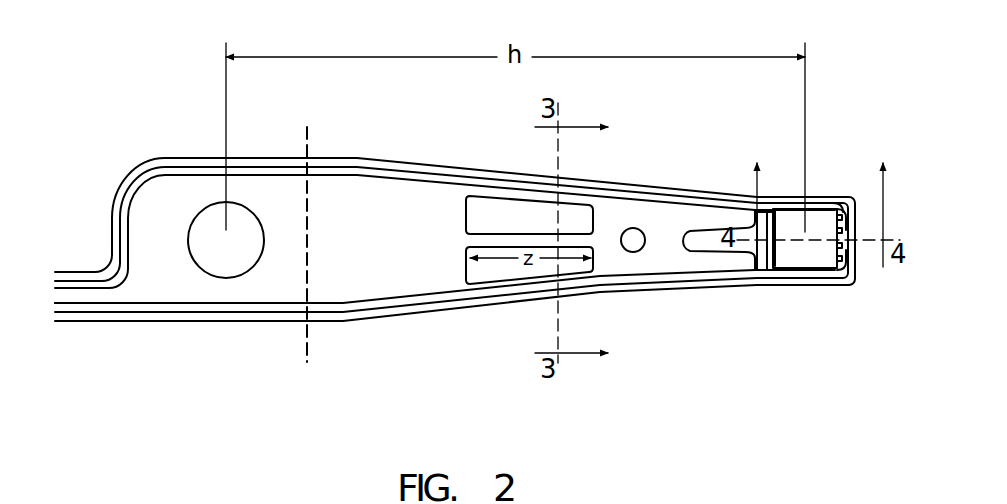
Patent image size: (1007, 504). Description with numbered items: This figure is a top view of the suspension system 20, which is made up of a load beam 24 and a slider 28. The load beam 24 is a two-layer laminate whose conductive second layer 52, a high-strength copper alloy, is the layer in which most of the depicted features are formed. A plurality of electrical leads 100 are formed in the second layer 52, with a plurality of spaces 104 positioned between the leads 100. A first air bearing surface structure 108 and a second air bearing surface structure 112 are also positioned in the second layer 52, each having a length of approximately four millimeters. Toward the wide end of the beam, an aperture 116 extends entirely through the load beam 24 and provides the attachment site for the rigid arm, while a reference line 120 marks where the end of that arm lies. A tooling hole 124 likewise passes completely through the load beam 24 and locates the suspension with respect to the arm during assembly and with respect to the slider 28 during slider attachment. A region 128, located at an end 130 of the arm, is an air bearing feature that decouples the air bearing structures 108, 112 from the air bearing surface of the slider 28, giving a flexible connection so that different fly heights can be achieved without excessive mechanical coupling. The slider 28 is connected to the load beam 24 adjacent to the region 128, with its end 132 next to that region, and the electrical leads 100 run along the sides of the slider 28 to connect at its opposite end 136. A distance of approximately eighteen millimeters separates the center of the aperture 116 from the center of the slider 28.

The suspension system 20 is at (483, 260).
The load beam 24 is at (183, 325).
The slider 28 is at (818, 222).
The second layer 52 is at (378, 249).
The electrical leads 100 is at (388, 172).
The spaces 104 is at (430, 183).
The first air bearing surface structure 108 is at (477, 212).
The second air bearing surface structure 112 is at (477, 272).
The aperture 116 is at (200, 212).
The reference line 120 is at (304, 346).
The tooling hole 124 is at (633, 228).
The region 128 is at (697, 238).
The end of the arm 130 is at (757, 268).
The end of the slider 132 is at (773, 252).
The end of the slider 136 is at (833, 207).